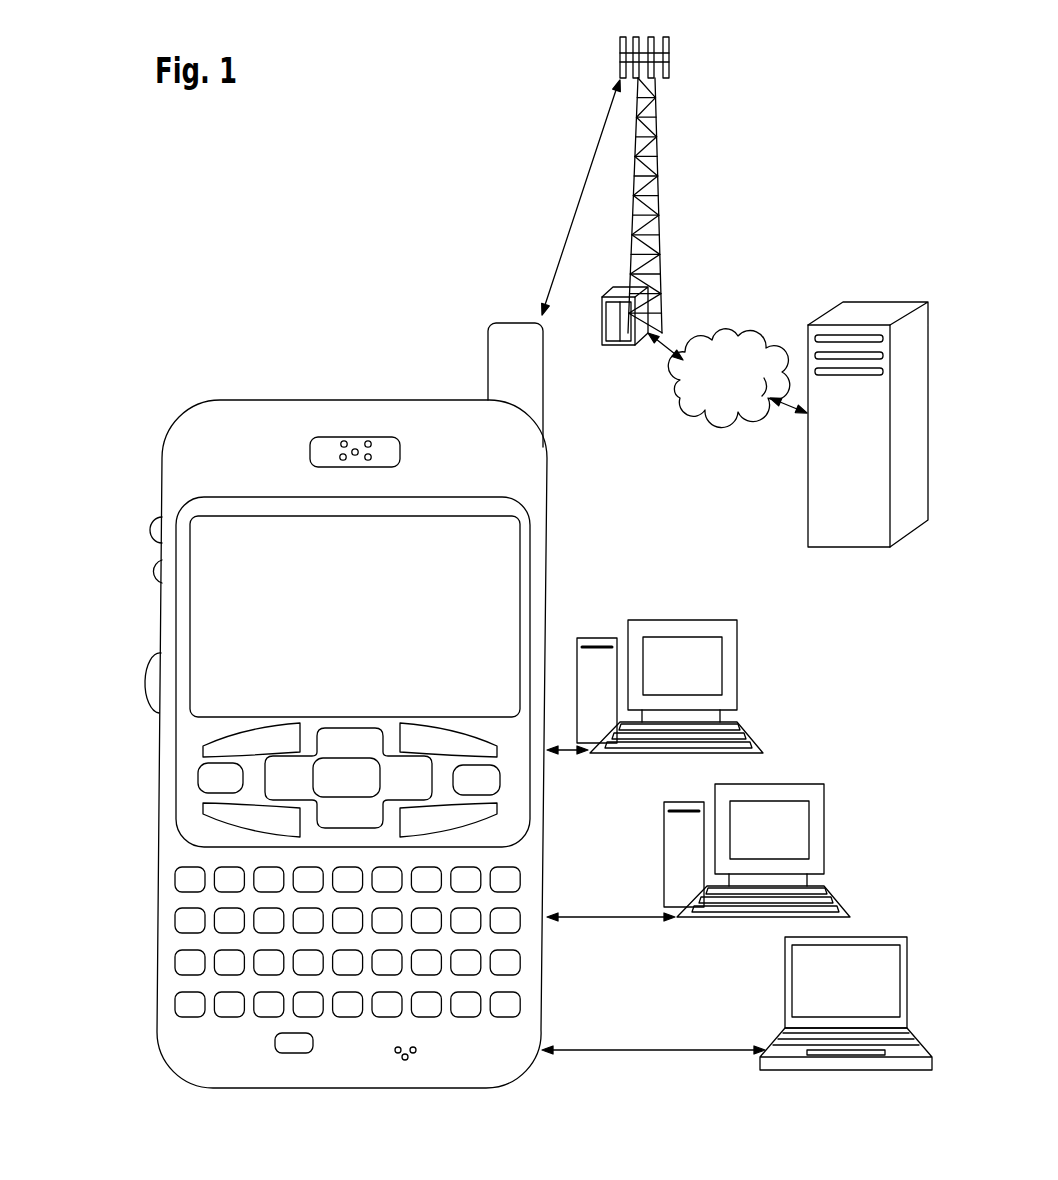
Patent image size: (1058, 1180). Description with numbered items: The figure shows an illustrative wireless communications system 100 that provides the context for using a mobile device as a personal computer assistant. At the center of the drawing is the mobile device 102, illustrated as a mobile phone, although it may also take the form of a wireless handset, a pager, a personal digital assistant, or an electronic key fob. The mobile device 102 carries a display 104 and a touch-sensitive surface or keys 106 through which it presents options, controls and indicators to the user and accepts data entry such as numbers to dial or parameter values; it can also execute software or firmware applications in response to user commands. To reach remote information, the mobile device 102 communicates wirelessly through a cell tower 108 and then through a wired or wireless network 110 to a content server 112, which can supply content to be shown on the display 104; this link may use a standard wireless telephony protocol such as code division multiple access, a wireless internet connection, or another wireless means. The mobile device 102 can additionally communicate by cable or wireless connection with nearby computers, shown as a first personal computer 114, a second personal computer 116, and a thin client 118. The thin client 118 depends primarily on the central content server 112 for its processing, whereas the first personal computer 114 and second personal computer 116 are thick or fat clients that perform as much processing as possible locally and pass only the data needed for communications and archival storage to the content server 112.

The wireless communications system 100 is at (556, 190).
The mobile device 102 is at (192, 1093).
The display 104 is at (512, 568).
The keys 106 is at (137, 718).
The cell tower 108 is at (606, 347).
The network 110 is at (690, 408).
The content server 112 is at (813, 547).
The first personal computer 114 is at (627, 760).
The second personal computer 116 is at (694, 917).
The thin client 118 is at (763, 1070).